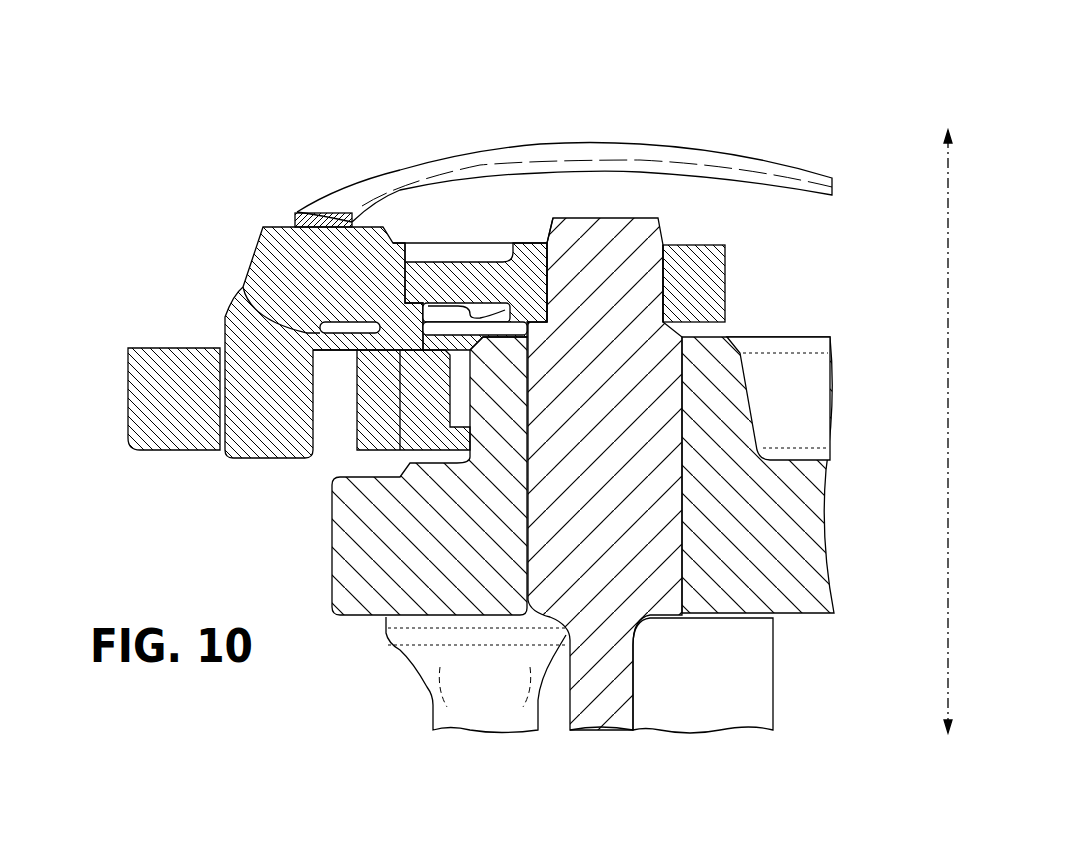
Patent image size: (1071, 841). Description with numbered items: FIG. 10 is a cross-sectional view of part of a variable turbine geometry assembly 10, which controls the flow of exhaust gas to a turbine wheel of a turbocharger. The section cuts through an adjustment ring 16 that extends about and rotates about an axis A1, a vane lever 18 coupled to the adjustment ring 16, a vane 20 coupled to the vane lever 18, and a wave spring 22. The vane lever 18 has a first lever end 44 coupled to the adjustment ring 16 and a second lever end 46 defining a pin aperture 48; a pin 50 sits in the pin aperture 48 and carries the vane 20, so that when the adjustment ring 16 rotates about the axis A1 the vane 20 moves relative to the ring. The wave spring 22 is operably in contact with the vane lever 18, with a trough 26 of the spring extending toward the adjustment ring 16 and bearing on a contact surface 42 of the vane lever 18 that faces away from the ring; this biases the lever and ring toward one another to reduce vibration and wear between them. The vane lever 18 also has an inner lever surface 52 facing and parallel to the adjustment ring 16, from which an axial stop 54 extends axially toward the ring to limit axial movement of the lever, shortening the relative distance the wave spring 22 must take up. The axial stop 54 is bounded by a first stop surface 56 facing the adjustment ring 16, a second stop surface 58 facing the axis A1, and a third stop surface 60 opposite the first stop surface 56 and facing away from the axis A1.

The variable turbine geometry assembly 10 is at (793, 91).
The adjustment ring 16 is at (128, 395).
The vane lever 18 is at (455, 290).
The vane 20 is at (735, 685).
The wave spring 22 is at (393, 177).
The trough 26 is at (330, 207).
The contact surface 42 is at (262, 228).
The first lever end 44 is at (248, 430).
The second lever end 46 is at (700, 275).
The pin aperture 48 is at (663, 292).
The pin 50 is at (610, 427).
The inner lever surface 52 is at (243, 287).
The axial stop 54 is at (403, 323).
The first stop surface 56 is at (332, 478).
The second stop surface 58 is at (550, 317).
The third stop surface 60 is at (405, 250).
The axis A1 is at (947, 420).